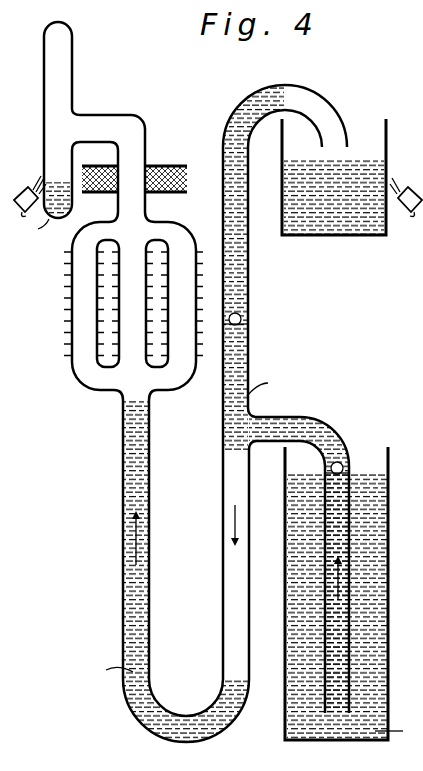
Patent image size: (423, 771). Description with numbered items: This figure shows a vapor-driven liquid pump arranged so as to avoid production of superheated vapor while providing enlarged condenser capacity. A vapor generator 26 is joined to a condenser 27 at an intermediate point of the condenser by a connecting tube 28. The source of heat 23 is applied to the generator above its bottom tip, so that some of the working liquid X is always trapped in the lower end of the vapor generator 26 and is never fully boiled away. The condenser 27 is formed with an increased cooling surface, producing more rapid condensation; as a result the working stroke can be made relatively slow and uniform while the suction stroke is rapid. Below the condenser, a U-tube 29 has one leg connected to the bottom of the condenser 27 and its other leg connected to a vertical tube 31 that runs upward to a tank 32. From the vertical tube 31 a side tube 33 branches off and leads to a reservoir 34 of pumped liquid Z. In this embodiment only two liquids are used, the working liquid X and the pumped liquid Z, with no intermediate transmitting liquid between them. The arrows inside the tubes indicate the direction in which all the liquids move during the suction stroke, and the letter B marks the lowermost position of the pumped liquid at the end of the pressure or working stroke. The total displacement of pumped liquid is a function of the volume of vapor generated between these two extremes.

The source of heat 23 is at (24, 189).
The vapor generator 26 is at (77, 117).
The condenser 27 is at (92, 380).
The connecting tube 28 is at (137, 139).
The U-tube 29 is at (226, 720).
The vertical tube 31 is at (249, 354).
The tank 32 is at (344, 236).
The side tube 33 is at (287, 418).
The reservoir 34 is at (389, 708).